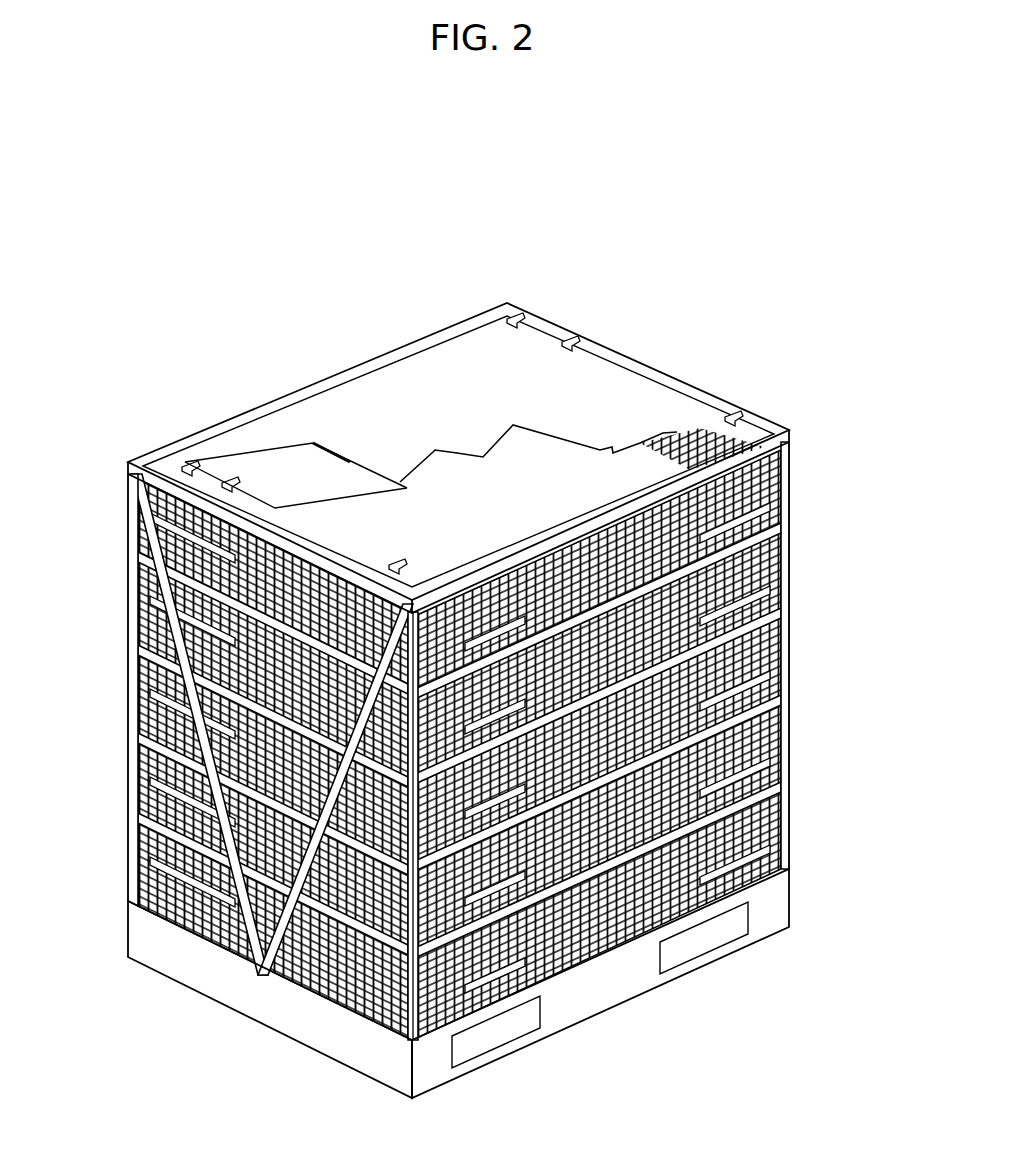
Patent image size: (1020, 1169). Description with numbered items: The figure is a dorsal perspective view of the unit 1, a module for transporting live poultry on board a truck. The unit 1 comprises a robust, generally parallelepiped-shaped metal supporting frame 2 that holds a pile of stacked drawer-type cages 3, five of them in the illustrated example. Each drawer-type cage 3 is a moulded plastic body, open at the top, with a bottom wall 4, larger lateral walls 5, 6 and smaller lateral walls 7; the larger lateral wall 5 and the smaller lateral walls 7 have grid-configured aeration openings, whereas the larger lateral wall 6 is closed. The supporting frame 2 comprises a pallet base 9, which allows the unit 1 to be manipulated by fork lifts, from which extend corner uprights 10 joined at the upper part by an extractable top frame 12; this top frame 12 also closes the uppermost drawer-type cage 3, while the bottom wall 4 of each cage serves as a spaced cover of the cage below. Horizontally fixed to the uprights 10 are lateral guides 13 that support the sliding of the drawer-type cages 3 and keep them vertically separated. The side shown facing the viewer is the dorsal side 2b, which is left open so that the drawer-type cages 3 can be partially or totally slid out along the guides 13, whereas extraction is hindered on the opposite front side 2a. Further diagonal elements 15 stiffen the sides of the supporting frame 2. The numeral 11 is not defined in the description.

The unit 1 is at (465, 631).
The supporting frame 2 is at (465, 682).
The front side 2a is at (277, 392).
The dorsal side 2b is at (597, 512).
The drawer-type cage 3 is at (786, 477).
The bottom wall 4 is at (457, 512).
The larger lateral wall 5 is at (735, 500).
The larger lateral wall 6 is at (298, 468).
The smaller lateral wall 7 is at (152, 548).
The pallet base 9 is at (603, 1010).
The corner upright 10 is at (792, 778).
The top frame 11 is at (645, 358).
The top frame 12 is at (474, 362).
The lateral guide 13 is at (200, 598).
The diagonal element 15 is at (288, 905).